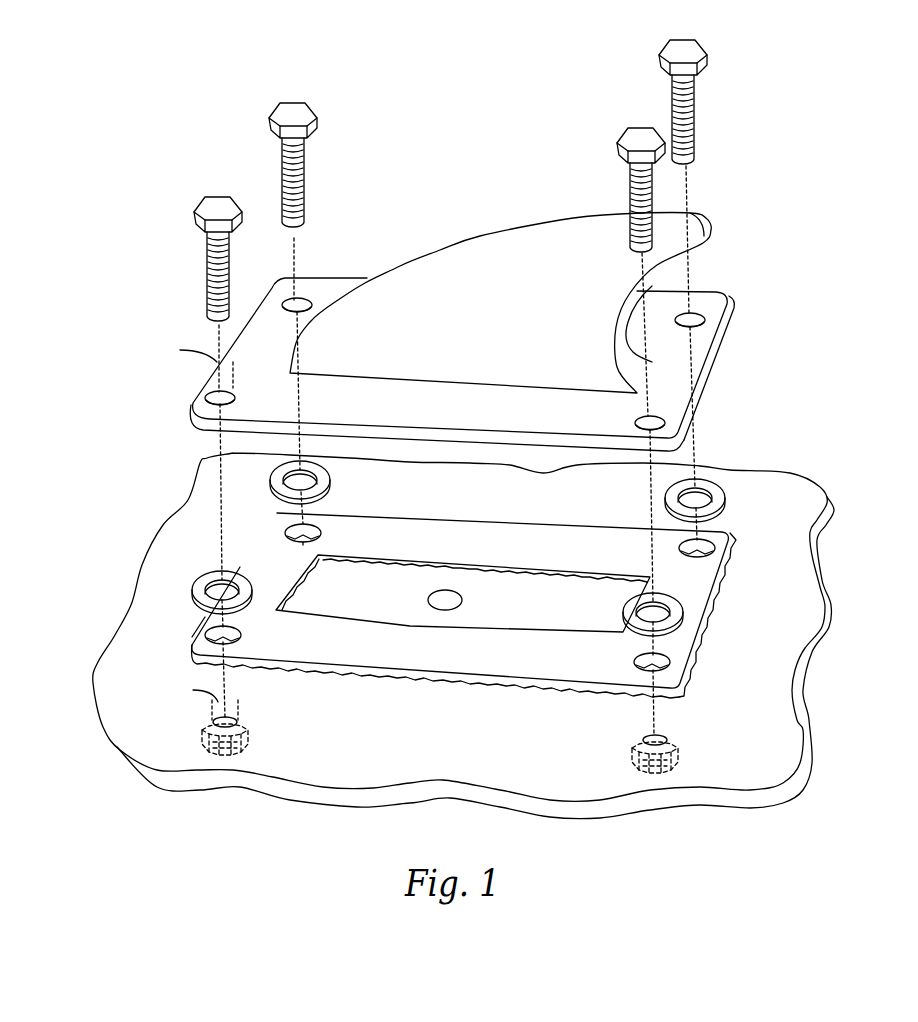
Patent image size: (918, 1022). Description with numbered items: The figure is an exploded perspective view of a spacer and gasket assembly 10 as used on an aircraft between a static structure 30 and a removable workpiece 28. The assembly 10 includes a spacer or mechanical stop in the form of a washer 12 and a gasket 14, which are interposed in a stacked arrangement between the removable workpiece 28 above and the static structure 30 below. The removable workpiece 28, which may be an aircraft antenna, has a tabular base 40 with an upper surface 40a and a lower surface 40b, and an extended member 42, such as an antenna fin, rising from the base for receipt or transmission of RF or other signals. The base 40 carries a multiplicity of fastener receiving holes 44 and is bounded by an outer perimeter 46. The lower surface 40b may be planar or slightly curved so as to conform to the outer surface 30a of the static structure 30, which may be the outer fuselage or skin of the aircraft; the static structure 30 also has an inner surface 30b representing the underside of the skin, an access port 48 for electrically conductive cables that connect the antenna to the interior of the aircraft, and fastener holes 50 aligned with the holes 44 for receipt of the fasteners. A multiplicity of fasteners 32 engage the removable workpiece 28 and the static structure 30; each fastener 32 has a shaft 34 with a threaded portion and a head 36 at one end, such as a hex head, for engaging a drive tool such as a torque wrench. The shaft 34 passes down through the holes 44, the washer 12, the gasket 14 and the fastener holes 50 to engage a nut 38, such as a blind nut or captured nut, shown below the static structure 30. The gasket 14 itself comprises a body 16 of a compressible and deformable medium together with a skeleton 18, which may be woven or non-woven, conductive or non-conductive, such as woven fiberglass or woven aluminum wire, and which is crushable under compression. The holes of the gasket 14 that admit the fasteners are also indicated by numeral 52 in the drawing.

The spacer and gasket assembly 10 is at (177, 570).
The washer 12 is at (742, 482).
The gasket 14 is at (738, 585).
The body 16 is at (700, 593).
The skeleton 18 is at (687, 677).
The removable workpiece 28 is at (419, 229).
The static structure 30 is at (434, 753).
The outer surface 30a is at (760, 770).
The inner surface 30b is at (673, 812).
The fastener 32 is at (730, 124).
The shaft 34 is at (699, 127).
The head 36 is at (690, 43).
The nut 38 is at (223, 790).
The base 40 is at (675, 367).
The upper surface 40a is at (412, 418).
The lower surface 40b is at (712, 383).
The extended member 42 is at (496, 318).
The fastener receiving hole 44 is at (700, 310).
The outer perimeter 46 is at (735, 316).
The access port 48 is at (428, 594).
The fastener hole 50 is at (660, 733).
The gasket hole 52 is at (707, 540).